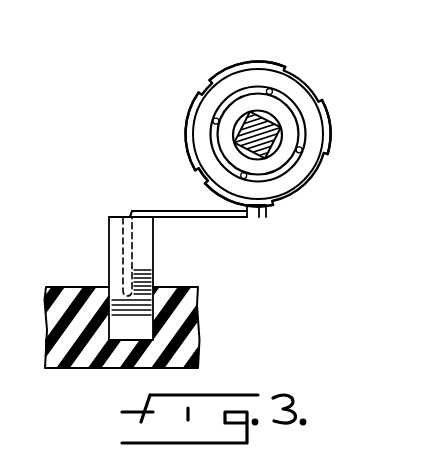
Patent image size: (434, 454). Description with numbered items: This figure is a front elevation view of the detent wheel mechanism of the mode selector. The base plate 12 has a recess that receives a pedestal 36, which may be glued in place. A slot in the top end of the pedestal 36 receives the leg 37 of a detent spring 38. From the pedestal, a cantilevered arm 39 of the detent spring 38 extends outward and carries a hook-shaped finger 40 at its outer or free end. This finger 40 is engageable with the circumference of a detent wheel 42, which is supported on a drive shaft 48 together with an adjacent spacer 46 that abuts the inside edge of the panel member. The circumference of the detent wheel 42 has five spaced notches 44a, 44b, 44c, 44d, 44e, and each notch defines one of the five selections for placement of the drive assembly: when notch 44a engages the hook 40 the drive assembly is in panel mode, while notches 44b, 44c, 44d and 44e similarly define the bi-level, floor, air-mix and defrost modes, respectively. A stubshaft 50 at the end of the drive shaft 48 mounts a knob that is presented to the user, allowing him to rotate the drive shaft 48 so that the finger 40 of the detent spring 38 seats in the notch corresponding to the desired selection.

The base plate 12 is at (96, 363).
The pedestal 36 is at (110, 267).
The leg 37 is at (118, 237).
The detent spring 38 is at (132, 211).
The cantilevered arm 39 is at (194, 218).
The hook-shaped finger 40 is at (253, 255).
The detent wheel 42 is at (317, 105).
The notch 44a is at (262, 212).
The notch 44b is at (363, 160).
The notch 44c is at (297, 62).
The notch 44d is at (197, 88).
The notch 44e is at (198, 173).
The spacer 46 is at (286, 130).
The drive shaft 48 is at (257, 110).
The stubshaft 50 is at (240, 135).